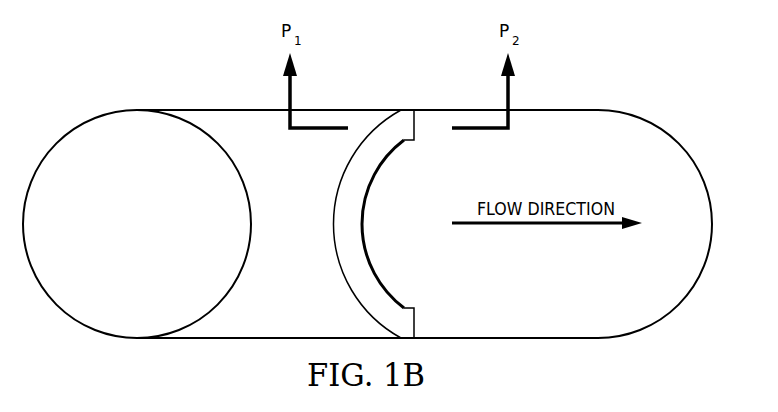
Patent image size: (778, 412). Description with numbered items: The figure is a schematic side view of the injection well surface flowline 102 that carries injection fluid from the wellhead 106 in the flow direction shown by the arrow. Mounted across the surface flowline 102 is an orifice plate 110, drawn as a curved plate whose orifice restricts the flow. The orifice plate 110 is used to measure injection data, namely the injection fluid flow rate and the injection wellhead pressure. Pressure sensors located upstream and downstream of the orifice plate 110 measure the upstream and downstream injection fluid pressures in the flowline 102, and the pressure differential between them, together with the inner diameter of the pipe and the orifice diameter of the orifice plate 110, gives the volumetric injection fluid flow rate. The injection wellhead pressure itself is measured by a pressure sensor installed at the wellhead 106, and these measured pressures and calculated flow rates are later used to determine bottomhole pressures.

The injection well surface flowline 102 is at (585, 115).
The wellhead 106 is at (155, 236).
The orifice plate 110 is at (333, 223).